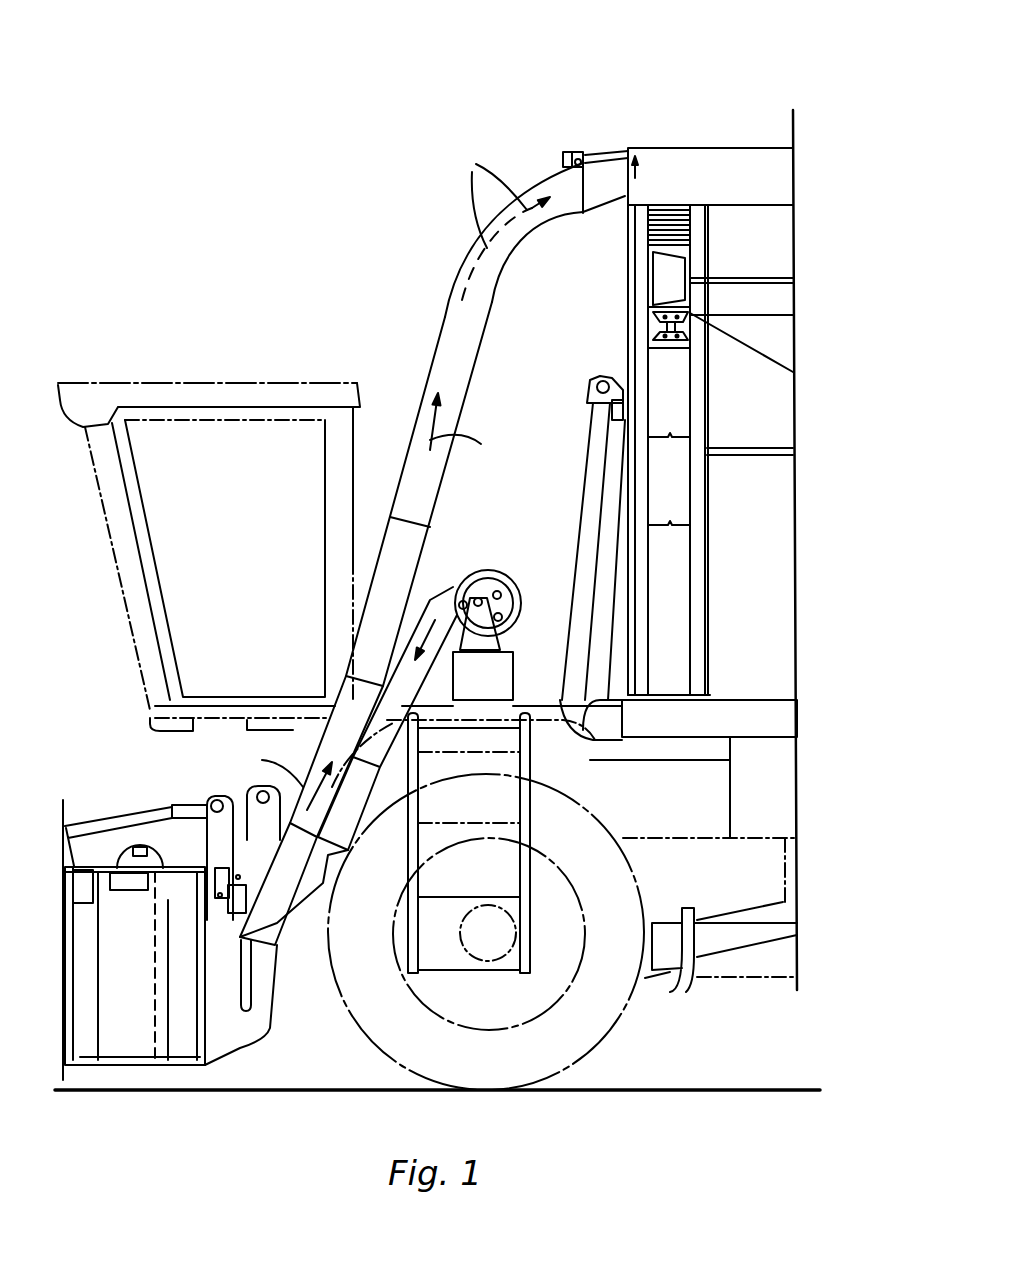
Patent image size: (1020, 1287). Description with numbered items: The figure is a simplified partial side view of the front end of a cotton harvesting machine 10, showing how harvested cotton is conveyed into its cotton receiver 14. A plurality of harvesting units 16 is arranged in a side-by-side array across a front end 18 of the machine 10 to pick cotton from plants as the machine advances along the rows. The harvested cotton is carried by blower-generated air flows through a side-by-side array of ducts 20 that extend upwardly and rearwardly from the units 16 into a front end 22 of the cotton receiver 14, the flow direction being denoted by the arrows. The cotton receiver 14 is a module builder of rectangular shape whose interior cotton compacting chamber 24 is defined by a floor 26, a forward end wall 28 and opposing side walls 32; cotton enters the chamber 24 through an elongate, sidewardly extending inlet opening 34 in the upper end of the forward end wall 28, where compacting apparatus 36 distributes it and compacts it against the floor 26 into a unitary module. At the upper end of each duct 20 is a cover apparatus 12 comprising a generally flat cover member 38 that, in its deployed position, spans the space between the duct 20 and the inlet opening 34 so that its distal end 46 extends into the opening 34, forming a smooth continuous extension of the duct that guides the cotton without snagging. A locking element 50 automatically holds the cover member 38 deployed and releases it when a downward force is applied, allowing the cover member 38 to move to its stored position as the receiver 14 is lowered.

The cotton harvesting machine 10 is at (360, 131).
The cover apparatus 12 is at (603, 140).
The cotton receiver 14 is at (745, 140).
The harvesting units 16 is at (276, 1044).
The front end 18 is at (150, 717).
The ducts 20 is at (444, 312).
The front end of cotton receiver 22 is at (679, 146).
The cotton compacting chamber 24 is at (768, 450).
The floor 26 is at (772, 696).
The forward end wall 28 is at (628, 306).
The side walls 32 is at (775, 524).
The inlet opening 34 is at (623, 200).
The compacting apparatus 36 is at (652, 288).
The cover member 38 is at (614, 152).
The distal end 46 is at (637, 154).
The locking element 50 is at (562, 162).